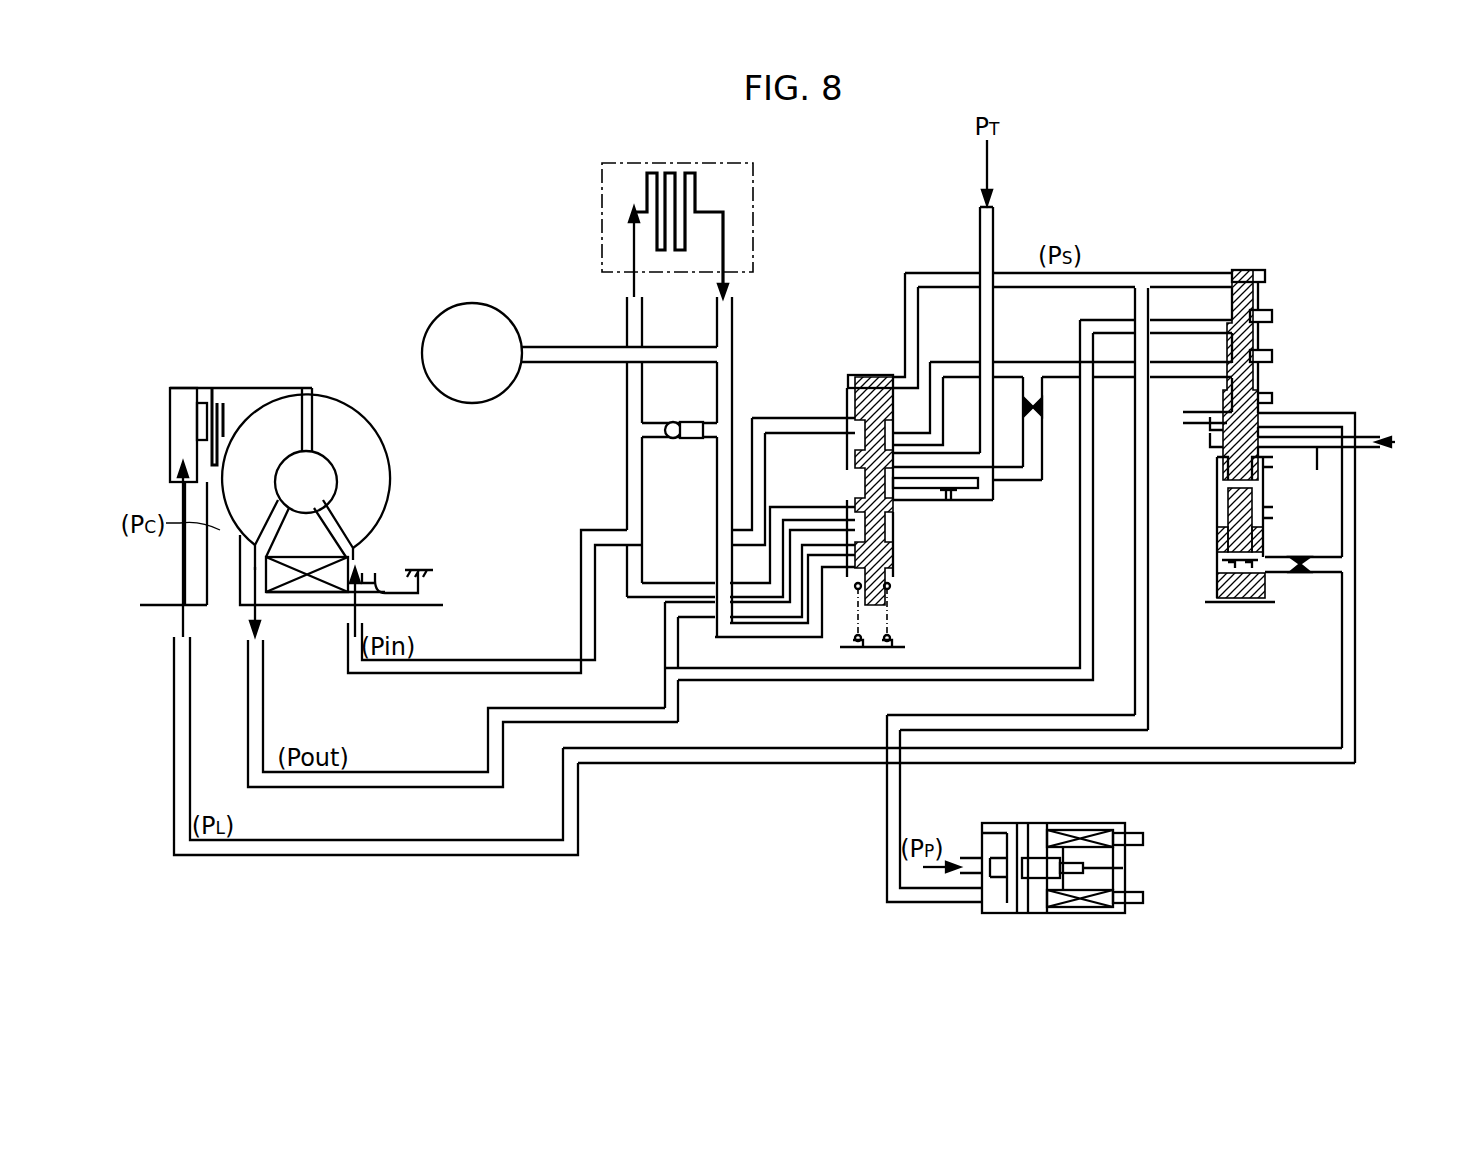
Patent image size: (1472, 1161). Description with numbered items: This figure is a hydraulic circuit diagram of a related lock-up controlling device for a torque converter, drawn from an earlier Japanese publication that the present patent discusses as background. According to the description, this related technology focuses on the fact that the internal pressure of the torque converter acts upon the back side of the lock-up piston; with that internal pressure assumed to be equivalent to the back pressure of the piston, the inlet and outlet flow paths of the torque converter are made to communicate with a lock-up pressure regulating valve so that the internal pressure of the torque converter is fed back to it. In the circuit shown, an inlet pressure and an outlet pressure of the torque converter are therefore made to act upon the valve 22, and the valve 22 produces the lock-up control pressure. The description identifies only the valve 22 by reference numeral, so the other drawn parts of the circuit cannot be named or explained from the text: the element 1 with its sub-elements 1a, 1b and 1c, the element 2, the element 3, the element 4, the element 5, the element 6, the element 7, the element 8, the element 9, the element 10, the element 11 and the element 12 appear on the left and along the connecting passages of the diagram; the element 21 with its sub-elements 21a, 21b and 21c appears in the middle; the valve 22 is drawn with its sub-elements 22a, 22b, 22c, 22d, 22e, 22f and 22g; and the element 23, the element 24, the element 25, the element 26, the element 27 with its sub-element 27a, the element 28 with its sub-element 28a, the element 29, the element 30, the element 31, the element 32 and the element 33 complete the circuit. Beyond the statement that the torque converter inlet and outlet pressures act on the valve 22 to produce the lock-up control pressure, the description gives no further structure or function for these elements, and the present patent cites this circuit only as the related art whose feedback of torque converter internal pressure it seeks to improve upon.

The variable displacement vane pump 1 is at (306, 452).
The cam ring 1a is at (368, 435).
The rotor 1b is at (276, 416).
The vane 1c is at (320, 530).
The control pressure passage 2 is at (165, 606).
The suction passage 3 is at (420, 606).
The spring 4 is at (307, 592).
The pivot pin 5 is at (388, 580).
The pressure chamber 6 is at (222, 580).
The oil passage 7 is at (437, 674).
The discharge passage 8 is at (262, 712).
The control piston 9 is at (226, 410).
The piston rod 10 is at (196, 395).
The control cylinder 11 is at (181, 425).
The line pressure passage 12 is at (175, 722).
The flow control valve 21 is at (885, 473).
The spring 21a is at (892, 636).
The spool 21b is at (887, 560).
The plug 21c is at (876, 375).
The valve 22 is at (1304, 445).
The spring seat 22a is at (1240, 603).
The spool 22b is at (1250, 270).
The port D 22c is at (1222, 270).
The drain port 22d is at (1195, 430).
The port A 22e is at (1272, 316).
The port B 22f is at (1272, 356).
The port C 22g is at (1262, 540).
The solenoid valve 23 is at (1143, 868).
The oil cooler 24 is at (753, 208).
The lubricating unit 25 is at (506, 314).
The pressure chamber 26 is at (957, 447).
The orifice plate 27 is at (990, 488).
The orifice 27a is at (1040, 412).
The piston 28 is at (962, 503).
The piston rod 28a is at (948, 501).
The inlet port 29 is at (790, 507).
The outlet port 30 is at (836, 565).
The relief valve 31 is at (687, 440).
The oil passage 32 is at (1318, 450).
The signal pressure passage 33 is at (1150, 586).